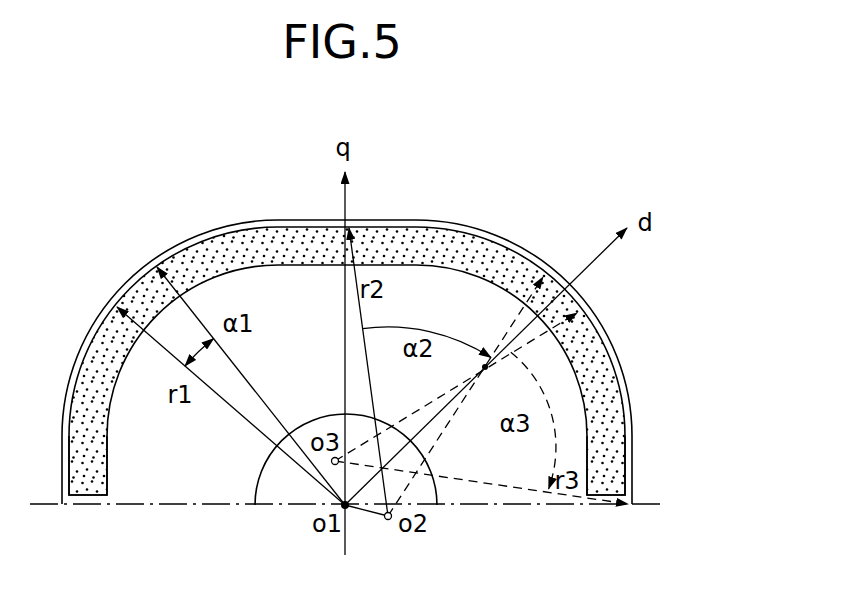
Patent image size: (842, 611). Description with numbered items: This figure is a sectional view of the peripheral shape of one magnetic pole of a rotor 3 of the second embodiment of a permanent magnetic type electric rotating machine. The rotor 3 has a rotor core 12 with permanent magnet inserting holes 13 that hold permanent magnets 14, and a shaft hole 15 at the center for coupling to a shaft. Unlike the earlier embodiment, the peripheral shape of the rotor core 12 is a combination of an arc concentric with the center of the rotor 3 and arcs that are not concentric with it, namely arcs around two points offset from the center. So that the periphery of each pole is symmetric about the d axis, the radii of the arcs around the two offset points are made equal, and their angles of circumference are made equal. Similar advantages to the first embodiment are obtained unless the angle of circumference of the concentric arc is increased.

The rotor 3 is at (616, 348).
The rotor core 12 is at (575, 453).
The permanent magnet inserting hole 13 is at (190, 240).
The permanent magnet 14 is at (82, 405).
The shaft hole 15 is at (290, 497).